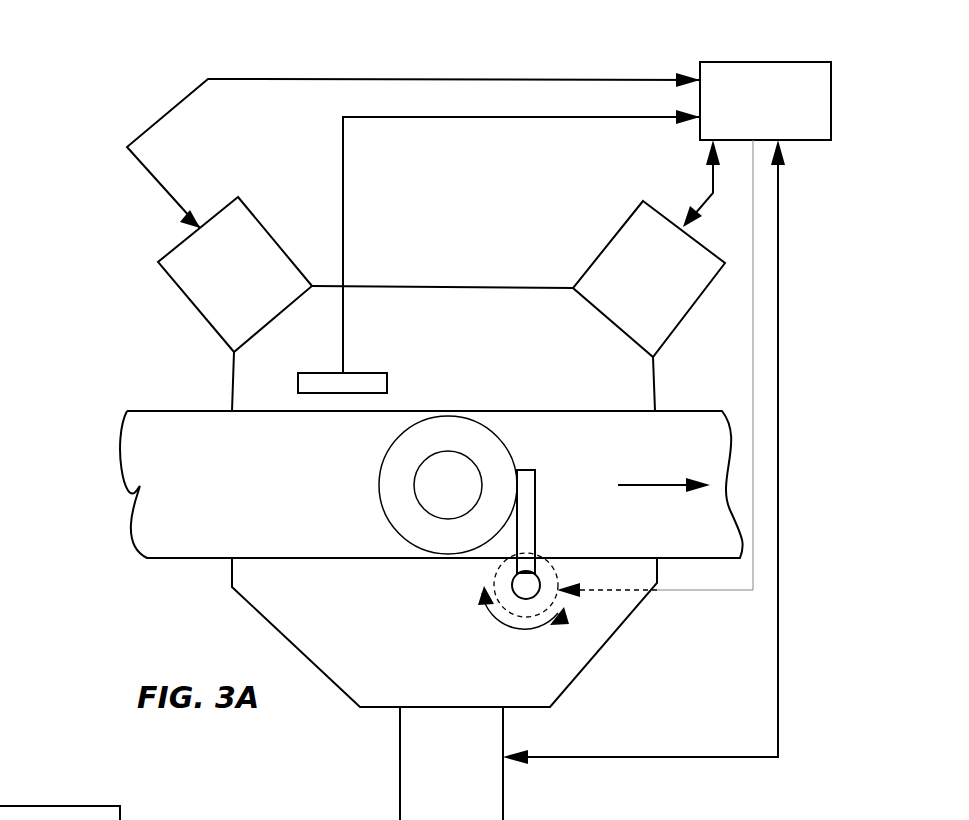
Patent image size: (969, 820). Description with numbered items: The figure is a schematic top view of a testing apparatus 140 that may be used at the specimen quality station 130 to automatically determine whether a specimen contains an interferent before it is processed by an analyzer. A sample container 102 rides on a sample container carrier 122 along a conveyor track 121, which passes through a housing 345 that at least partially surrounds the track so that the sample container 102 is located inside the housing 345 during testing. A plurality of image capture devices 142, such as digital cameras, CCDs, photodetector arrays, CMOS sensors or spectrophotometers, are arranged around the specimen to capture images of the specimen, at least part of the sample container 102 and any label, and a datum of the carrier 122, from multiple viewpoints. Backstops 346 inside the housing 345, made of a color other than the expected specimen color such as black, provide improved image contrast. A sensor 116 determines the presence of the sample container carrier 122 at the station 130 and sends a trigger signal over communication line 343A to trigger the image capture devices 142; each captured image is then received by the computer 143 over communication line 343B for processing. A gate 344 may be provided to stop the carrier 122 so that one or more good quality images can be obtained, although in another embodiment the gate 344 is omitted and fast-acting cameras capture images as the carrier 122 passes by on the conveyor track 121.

The specimen quality station 130 is at (166, 60).
The testing apparatus 140 is at (134, 238).
The image capture device 142 is at (201, 313).
The computer 143 is at (775, 62).
The communication line 343A is at (493, 117).
The communication line 343B is at (540, 79).
The housing 345 is at (498, 286).
The backstop 346 is at (443, 286).
The sensor 116 is at (357, 373).
The conveyor track 121 is at (158, 562).
The sample container carrier 122 is at (384, 443).
The sample container 102 is at (373, 478).
The gate 344 is at (537, 510).